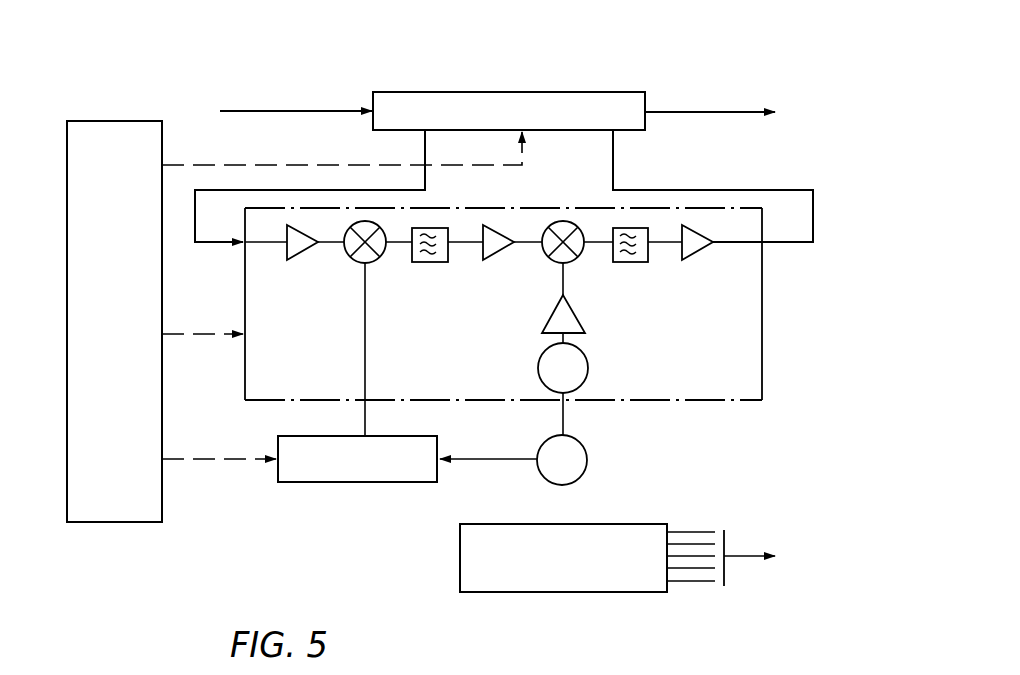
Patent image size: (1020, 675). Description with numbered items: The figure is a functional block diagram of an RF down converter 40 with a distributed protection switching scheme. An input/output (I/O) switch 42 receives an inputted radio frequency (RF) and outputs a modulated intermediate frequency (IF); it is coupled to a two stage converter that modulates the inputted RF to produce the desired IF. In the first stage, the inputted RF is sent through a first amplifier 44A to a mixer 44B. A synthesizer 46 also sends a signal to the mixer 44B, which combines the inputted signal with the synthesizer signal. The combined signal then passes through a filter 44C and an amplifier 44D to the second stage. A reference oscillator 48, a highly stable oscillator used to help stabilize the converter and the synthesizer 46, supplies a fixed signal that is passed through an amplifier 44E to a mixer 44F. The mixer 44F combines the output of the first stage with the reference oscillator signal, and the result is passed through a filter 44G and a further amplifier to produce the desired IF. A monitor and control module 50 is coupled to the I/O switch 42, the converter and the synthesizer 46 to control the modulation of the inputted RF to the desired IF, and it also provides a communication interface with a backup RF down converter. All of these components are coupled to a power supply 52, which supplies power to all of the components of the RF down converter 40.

The RF down converter 40 is at (664, 76).
The input/output (I/O) switch 42 is at (495, 92).
The first amplifier 44A is at (302, 250).
The mixer 44B is at (358, 261).
The filter 44C is at (432, 262).
The amplifier 44D is at (500, 250).
The amplifier 44E is at (548, 318).
The mixer 44F is at (584, 258).
The filter 44G is at (647, 262).
The synthesizer 46 is at (358, 483).
The reference oscillator 48 is at (541, 443).
The monitor and control module 50 is at (77, 372).
The power supply 52 is at (575, 593).